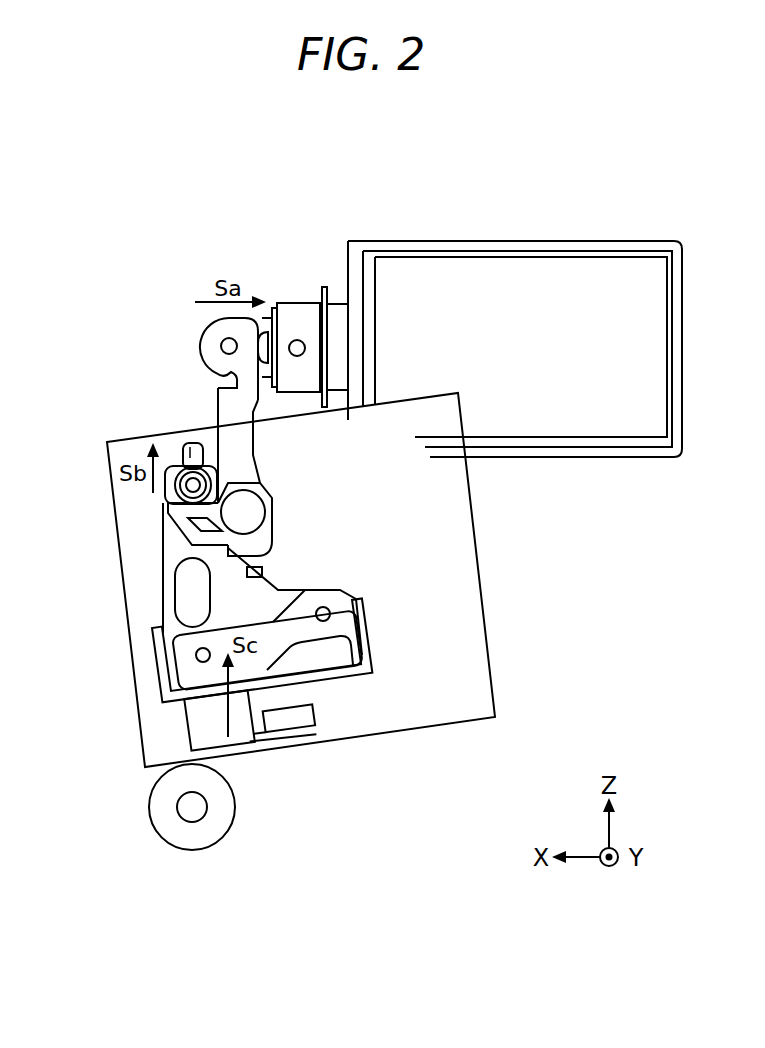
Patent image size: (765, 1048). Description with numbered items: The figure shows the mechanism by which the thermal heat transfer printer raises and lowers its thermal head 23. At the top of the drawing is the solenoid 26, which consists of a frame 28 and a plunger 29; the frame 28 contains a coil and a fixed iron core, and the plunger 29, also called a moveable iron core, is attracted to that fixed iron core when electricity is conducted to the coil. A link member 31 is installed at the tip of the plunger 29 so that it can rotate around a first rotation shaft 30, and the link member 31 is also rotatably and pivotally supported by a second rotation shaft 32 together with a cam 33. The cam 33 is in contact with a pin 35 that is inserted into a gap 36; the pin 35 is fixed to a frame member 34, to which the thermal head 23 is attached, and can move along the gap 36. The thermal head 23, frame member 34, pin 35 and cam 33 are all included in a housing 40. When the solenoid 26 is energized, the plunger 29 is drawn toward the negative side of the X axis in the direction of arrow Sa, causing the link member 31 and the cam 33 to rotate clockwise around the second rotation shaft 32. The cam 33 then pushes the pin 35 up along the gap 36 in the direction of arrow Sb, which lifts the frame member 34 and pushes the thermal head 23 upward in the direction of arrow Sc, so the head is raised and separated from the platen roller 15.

The platen roller 15 is at (236, 805).
The thermal head 23 is at (183, 735).
The solenoid 26 is at (272, 160).
The frame 28 is at (378, 241).
The plunger 29 is at (298, 303).
The first rotation shaft 30 is at (203, 333).
The link member 31 is at (217, 400).
The second rotation shaft 32 is at (274, 500).
The cam 33 is at (180, 530).
The frame member 34 is at (162, 597).
The pin 35 is at (185, 490).
The gap 36 is at (193, 447).
The housing 40 is at (495, 640).